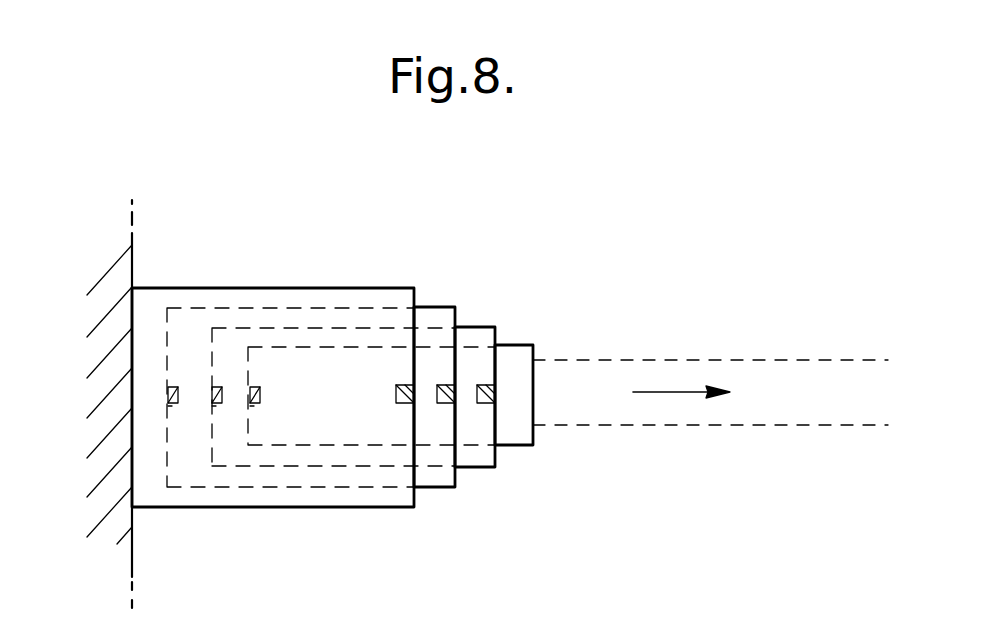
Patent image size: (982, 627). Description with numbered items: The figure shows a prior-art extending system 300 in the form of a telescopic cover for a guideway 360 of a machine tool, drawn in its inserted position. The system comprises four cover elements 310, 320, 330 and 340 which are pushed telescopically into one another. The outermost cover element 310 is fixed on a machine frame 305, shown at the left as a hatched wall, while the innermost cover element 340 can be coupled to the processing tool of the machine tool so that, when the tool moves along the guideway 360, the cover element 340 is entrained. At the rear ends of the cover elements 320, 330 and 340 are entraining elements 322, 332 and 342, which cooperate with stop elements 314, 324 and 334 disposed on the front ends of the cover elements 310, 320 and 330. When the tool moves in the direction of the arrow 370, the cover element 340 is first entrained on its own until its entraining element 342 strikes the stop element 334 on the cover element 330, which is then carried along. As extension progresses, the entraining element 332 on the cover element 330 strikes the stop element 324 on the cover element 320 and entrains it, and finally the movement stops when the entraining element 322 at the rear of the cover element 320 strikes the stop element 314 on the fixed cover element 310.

The extending system 300 is at (360, 248).
The machine frame 305 is at (132, 243).
The cover element 310 is at (173, 508).
The stop element 314 is at (400, 404).
The cover element 320 is at (238, 488).
The entraining element 322 is at (168, 395).
The stop element 324 is at (445, 385).
The cover element 330 is at (305, 468).
The entraining element 332 is at (221, 393).
The stop element 334 is at (490, 385).
The cover element 340 is at (367, 447).
The entraining element 342 is at (259, 398).
The guideway 360 is at (868, 314).
The arrow 370 is at (670, 392).